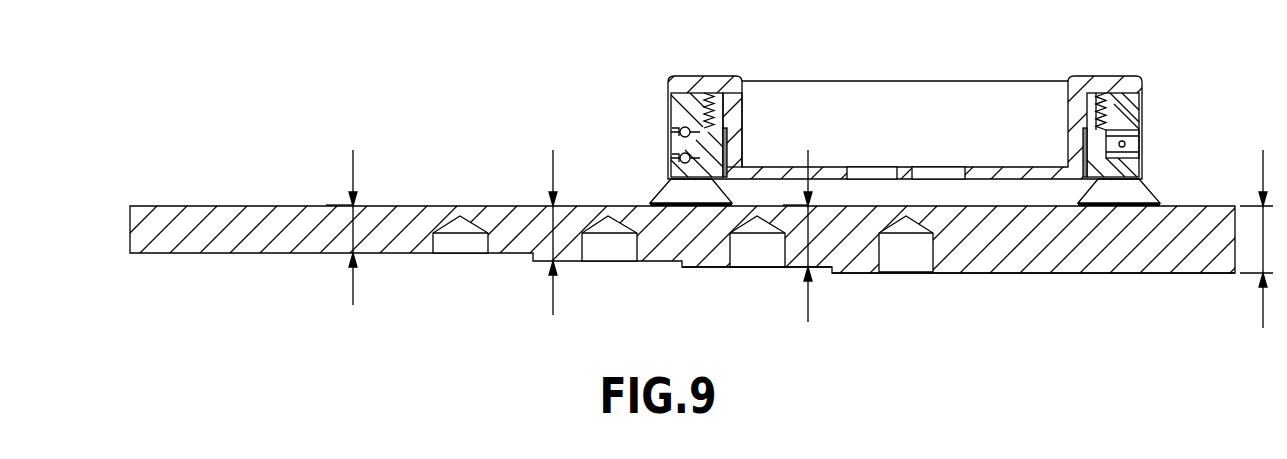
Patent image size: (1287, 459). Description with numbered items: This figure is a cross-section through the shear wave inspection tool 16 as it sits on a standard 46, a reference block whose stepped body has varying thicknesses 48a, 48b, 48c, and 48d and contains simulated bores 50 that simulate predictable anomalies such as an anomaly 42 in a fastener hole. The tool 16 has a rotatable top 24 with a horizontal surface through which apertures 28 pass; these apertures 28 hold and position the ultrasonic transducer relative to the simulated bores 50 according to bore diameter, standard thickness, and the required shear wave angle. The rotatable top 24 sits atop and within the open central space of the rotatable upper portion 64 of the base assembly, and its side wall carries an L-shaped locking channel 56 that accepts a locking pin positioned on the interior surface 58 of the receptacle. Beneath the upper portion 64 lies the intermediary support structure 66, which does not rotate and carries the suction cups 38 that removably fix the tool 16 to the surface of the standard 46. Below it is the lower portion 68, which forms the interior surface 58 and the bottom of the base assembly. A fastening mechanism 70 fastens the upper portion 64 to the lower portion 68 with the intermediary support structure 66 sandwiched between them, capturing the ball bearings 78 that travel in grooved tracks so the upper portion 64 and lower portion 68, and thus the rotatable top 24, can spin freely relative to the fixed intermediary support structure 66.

The shear wave inspection tool 16 is at (648, 112).
The rotatable top 24 is at (1102, 90).
The apertures 28 is at (928, 168).
The suction cups 38 is at (1148, 196).
The anomaly 42 is at (870, 268).
The standard 46 is at (193, 220).
The thickness 48a is at (1257, 247).
The thickness 48b is at (779, 256).
The thickness 48c is at (535, 255).
The thickness 48d is at (350, 236).
The simulated bores 50 is at (461, 250).
The L-shaped locking channel 56 is at (727, 158).
The interior surface 58 is at (728, 102).
The upper portion 64 is at (688, 105).
The intermediary support structure 66 is at (1132, 145).
The lower portion 68 is at (678, 177).
The fastening mechanism 70 is at (1107, 110).
The ball bearings 78 is at (680, 158).